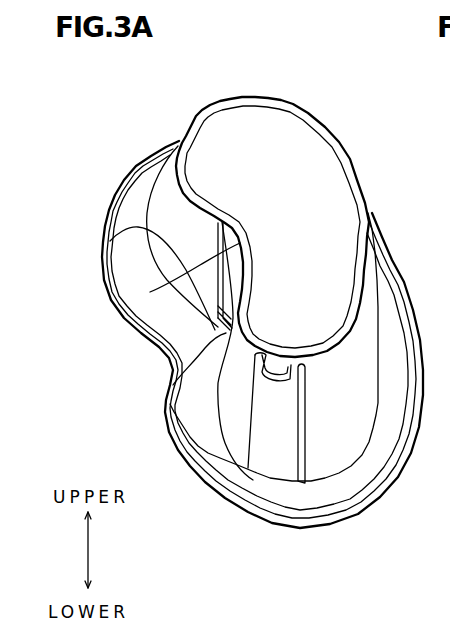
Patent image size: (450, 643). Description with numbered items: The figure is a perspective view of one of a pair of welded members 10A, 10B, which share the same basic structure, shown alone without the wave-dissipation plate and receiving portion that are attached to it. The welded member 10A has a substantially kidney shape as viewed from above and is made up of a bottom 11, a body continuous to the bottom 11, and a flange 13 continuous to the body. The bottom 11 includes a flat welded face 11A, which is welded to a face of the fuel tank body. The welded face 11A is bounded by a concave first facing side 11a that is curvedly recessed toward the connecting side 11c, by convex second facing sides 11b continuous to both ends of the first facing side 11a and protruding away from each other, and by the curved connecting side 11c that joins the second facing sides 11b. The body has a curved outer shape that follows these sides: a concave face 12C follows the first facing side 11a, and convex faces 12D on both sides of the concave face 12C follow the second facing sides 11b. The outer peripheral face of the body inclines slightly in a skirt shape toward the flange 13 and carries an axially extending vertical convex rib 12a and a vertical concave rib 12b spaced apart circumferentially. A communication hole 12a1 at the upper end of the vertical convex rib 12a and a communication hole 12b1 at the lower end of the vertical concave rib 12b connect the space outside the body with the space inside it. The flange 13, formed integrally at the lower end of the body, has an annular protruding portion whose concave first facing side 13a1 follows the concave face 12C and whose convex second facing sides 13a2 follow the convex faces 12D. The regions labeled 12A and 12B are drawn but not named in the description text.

The welded member 10A is at (325, 140).
The welded member 10B is at (247, 310).
The bottom 11 is at (264, 242).
The welded face 11A is at (305, 208).
The first facing side 11a is at (228, 279).
The second facing side 11b is at (188, 130).
The connecting side 11c is at (352, 177).
The recess floor 12A is at (360, 368).
The shelf surface 12B is at (380, 293).
The concave face 12C is at (207, 240).
The convex face 12D is at (177, 203).
The vertical convex rib 12a is at (272, 458).
The communication hole 12a1 is at (281, 383).
The vertical concave rib 12b is at (218, 323).
The communication hole 12b1 is at (182, 345).
The flange 13 is at (397, 477).
The first facing side 13a1 is at (217, 308).
The second facing side 13a2 is at (110, 241).